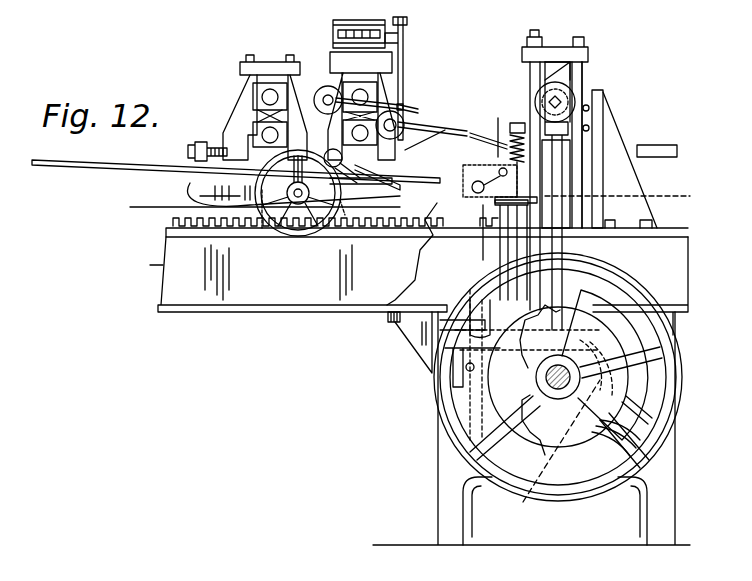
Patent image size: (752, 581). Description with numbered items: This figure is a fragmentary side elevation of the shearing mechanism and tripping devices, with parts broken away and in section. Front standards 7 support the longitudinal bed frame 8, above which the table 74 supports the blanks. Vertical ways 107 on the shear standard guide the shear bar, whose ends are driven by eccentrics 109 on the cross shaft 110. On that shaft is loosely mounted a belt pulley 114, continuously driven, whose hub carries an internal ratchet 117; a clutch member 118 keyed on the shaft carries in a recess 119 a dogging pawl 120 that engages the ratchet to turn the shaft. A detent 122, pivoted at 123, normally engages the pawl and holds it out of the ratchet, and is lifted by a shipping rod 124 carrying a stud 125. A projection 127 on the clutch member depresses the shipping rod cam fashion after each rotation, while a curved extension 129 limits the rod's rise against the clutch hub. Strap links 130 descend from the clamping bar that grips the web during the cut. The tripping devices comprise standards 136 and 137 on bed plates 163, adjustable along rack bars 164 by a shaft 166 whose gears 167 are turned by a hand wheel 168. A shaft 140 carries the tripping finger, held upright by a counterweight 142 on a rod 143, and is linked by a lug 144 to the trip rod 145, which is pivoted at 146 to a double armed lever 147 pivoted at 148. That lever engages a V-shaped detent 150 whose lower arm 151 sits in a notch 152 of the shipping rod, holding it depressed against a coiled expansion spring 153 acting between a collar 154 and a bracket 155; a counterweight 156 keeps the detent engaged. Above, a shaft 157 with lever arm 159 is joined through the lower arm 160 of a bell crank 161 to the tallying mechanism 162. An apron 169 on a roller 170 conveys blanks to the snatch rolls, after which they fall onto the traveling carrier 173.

The standards 7 is at (437, 515).
The bed frame 8 is at (162, 296).
The table 74 is at (668, 145).
The vertically extending ways 107 is at (583, 68).
The eccentric 109 is at (438, 443).
The cross shaft 110 is at (563, 368).
The belt pulley 114 is at (602, 495).
The internal gear or ratchet 117 is at (510, 400).
The clutch member 118 is at (510, 382).
The recess 119 is at (432, 372).
The dogging pawl 120 is at (430, 350).
The detent 122 is at (470, 300).
The pivot 123 is at (472, 335).
The shipping rod 124 is at (500, 248).
The stud 125 is at (482, 300).
The stud or projection 127 is at (600, 375).
The curved extension 129 is at (520, 490).
The strap link 130 is at (590, 145).
The standards 136 is at (240, 103).
The standards 137 is at (360, 220).
The shaft 140 is at (333, 150).
The counterweight 142 is at (365, 172).
The rod 143 is at (430, 144).
The link or lug 144 is at (296, 208).
The trip rod 145 is at (112, 170).
The pivotal connection 146 is at (463, 182).
The double armed lever 147 is at (432, 121).
The pivot 148 is at (470, 168).
The V-shaped detent 150 is at (515, 123).
The lower arm 151 is at (530, 238).
The notch 152 is at (619, 191).
The coiled expansion spring 153 is at (570, 120).
The collar 154 is at (538, 96).
The bracket 155 is at (507, 177).
The counterweight 156 is at (478, 200).
The shaft 157 is at (322, 88).
The lever arm 159 is at (406, 106).
The lower arm 160 is at (403, 72).
The bell crank 161 is at (405, 36).
The tallying mechanism 162 is at (333, 26).
The bed plates 163 is at (365, 300).
The rack bars 164 is at (173, 228).
The shaft 166 is at (290, 200).
The gear 167 is at (195, 192).
The hand wheel 168 is at (290, 208).
The apron 169 is at (425, 150).
The roller 170 is at (410, 118).
The traveling carrier 173 is at (160, 208).